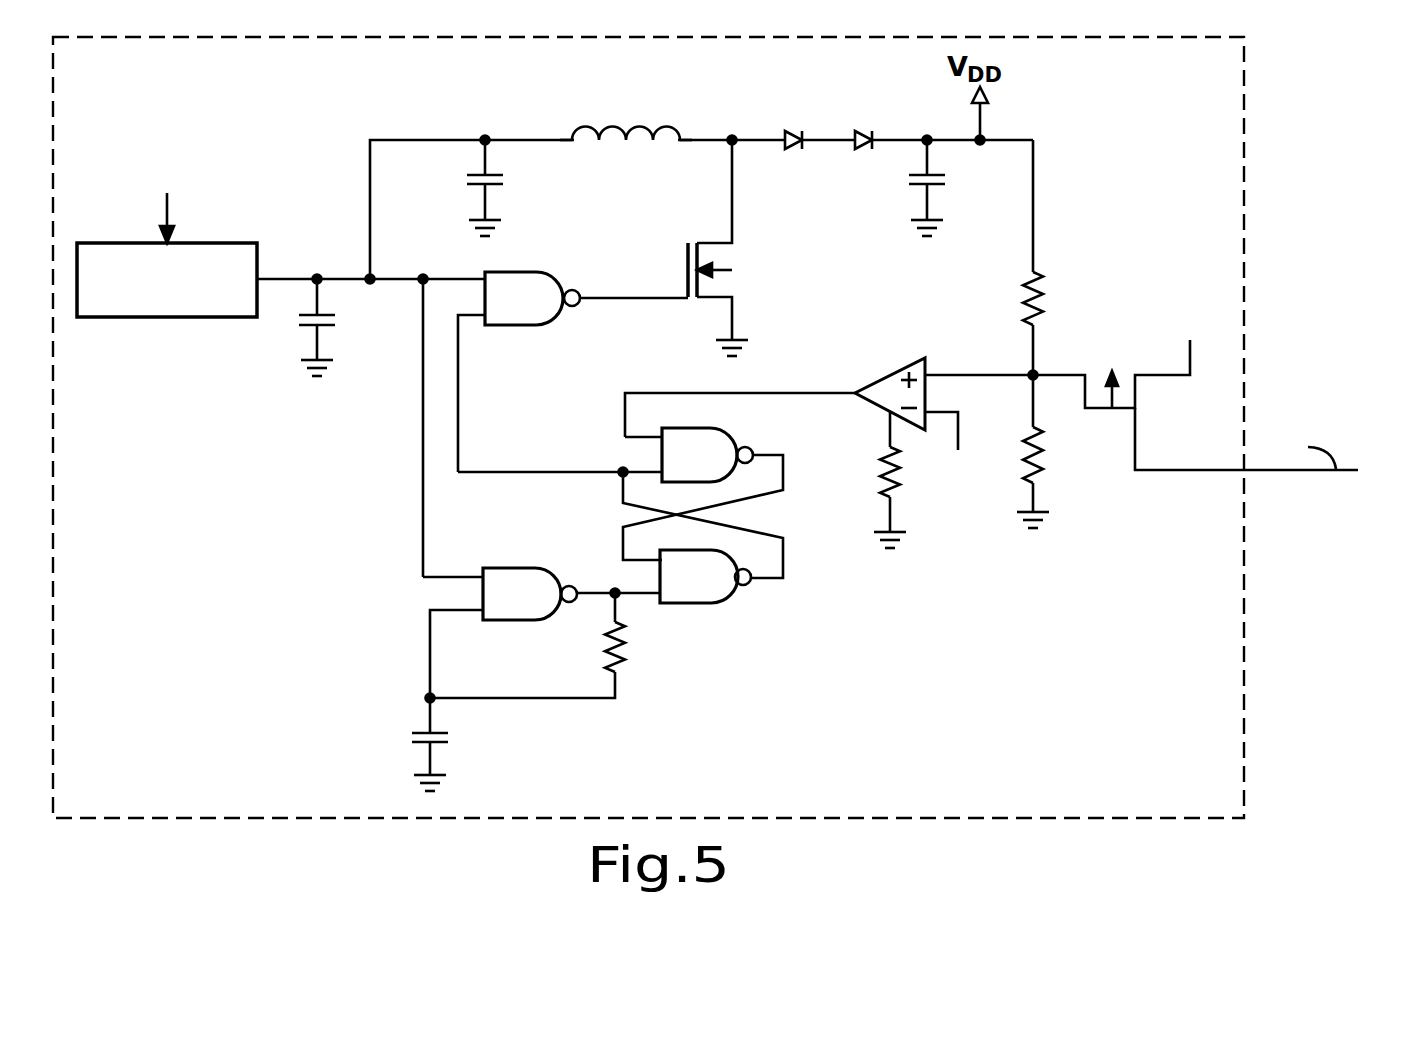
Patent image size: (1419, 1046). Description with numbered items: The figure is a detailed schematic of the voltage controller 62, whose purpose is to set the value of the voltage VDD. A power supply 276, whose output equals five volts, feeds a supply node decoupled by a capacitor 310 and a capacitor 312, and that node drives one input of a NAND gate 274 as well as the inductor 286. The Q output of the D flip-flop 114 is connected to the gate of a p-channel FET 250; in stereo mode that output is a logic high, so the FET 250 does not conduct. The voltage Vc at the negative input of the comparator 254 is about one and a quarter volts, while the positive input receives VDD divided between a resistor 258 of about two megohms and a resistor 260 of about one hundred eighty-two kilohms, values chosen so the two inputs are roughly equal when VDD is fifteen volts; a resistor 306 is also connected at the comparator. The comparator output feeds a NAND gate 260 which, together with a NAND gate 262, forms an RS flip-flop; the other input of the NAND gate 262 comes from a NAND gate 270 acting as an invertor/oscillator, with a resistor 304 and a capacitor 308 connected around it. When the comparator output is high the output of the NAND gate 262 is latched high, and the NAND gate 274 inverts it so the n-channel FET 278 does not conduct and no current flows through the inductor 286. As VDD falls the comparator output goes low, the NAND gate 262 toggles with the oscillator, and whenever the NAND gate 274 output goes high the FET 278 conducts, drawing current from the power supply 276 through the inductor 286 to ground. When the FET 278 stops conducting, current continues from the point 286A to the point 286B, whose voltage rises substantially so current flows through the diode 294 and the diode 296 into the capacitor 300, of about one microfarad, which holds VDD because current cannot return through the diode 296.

The voltage controller 62 is at (1246, 112).
The power supply 276 is at (180, 320).
The capacitor 310 is at (325, 330).
The capacitor 312 is at (474, 188).
The inductor 286 is at (640, 127).
The point 286A is at (548, 126).
The point 286B is at (710, 126).
The n-channel FET 278 is at (686, 272).
The NAND gate 274 is at (506, 328).
The diode 294 is at (797, 150).
The diode 296 is at (865, 139).
The capacitor 300 is at (937, 187).
The resistor 258 is at (1045, 292).
The comparator 254 is at (893, 378).
The resistor / NAND gate 260 is at (1040, 472).
The resistor 306 is at (898, 483).
The p-channel FET 250 is at (1100, 411).
The D flip-flop 114 is at (1267, 460).
The NAND gate 262 is at (694, 604).
The NAND gate 270 is at (535, 567).
The resistor 304 is at (625, 640).
The capacitor 308 is at (448, 744).